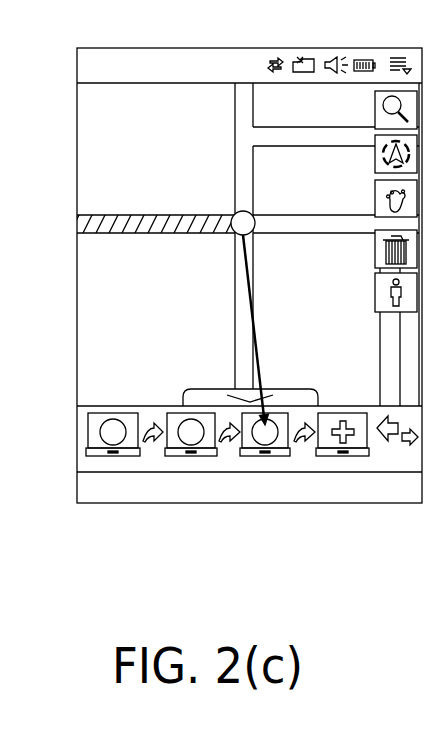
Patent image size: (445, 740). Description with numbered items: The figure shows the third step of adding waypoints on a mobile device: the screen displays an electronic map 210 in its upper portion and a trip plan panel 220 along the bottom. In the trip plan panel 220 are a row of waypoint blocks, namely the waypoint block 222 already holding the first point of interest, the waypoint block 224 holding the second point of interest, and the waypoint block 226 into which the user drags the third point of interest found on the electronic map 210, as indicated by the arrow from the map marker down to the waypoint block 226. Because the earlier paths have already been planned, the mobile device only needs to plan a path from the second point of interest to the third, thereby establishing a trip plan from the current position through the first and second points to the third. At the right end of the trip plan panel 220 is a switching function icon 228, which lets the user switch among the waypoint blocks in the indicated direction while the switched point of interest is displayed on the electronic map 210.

The electronic map 210 is at (224, 313).
The trip plan panel 220 is at (225, 465).
The waypoint block 222 is at (112, 436).
The waypoint block 224 is at (190, 436).
The waypoint block 226 is at (264, 436).
The switching function icon 228 is at (396, 437).